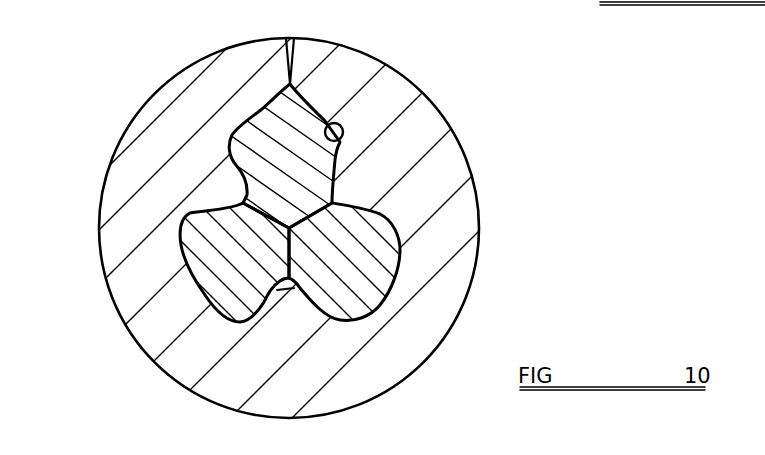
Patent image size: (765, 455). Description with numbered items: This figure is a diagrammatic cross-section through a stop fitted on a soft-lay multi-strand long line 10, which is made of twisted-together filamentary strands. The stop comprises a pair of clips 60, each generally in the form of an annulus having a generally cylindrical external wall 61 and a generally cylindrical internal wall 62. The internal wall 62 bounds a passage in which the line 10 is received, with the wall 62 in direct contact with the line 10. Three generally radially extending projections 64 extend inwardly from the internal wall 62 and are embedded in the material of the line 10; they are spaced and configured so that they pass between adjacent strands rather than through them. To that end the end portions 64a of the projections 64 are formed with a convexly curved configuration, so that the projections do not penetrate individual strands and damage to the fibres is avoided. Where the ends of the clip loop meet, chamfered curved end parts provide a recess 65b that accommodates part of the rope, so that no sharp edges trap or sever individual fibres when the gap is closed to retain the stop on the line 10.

The line 10 is at (377, 250).
The clip 60 is at (477, 203).
The external wall 61 is at (478, 257).
The internal wall 62 is at (343, 152).
The inwardly extending projection 64 is at (229, 193).
The end portion 64a is at (280, 290).
The recess 65b is at (299, 84).